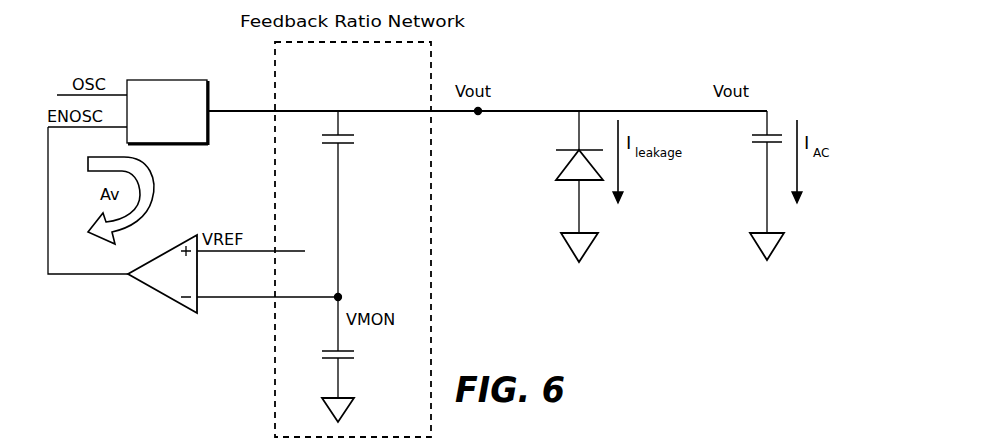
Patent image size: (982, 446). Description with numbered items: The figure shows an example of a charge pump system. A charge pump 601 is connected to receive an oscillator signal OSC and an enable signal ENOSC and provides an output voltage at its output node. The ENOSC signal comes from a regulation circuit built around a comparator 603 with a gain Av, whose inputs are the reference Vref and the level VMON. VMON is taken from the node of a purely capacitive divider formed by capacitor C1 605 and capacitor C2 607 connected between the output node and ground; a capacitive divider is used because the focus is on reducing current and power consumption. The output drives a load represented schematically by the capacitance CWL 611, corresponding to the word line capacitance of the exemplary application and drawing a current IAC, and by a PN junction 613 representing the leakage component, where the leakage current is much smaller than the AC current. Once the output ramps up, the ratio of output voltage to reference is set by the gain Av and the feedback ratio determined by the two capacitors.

The charge pump 601 is at (185, 80).
The comparator 603 is at (144, 287).
The capacitor C1 605 is at (346, 146).
The capacitor C2 607 is at (346, 362).
The capacitance CWL 611 is at (757, 146).
The PN junction 613 is at (565, 183).